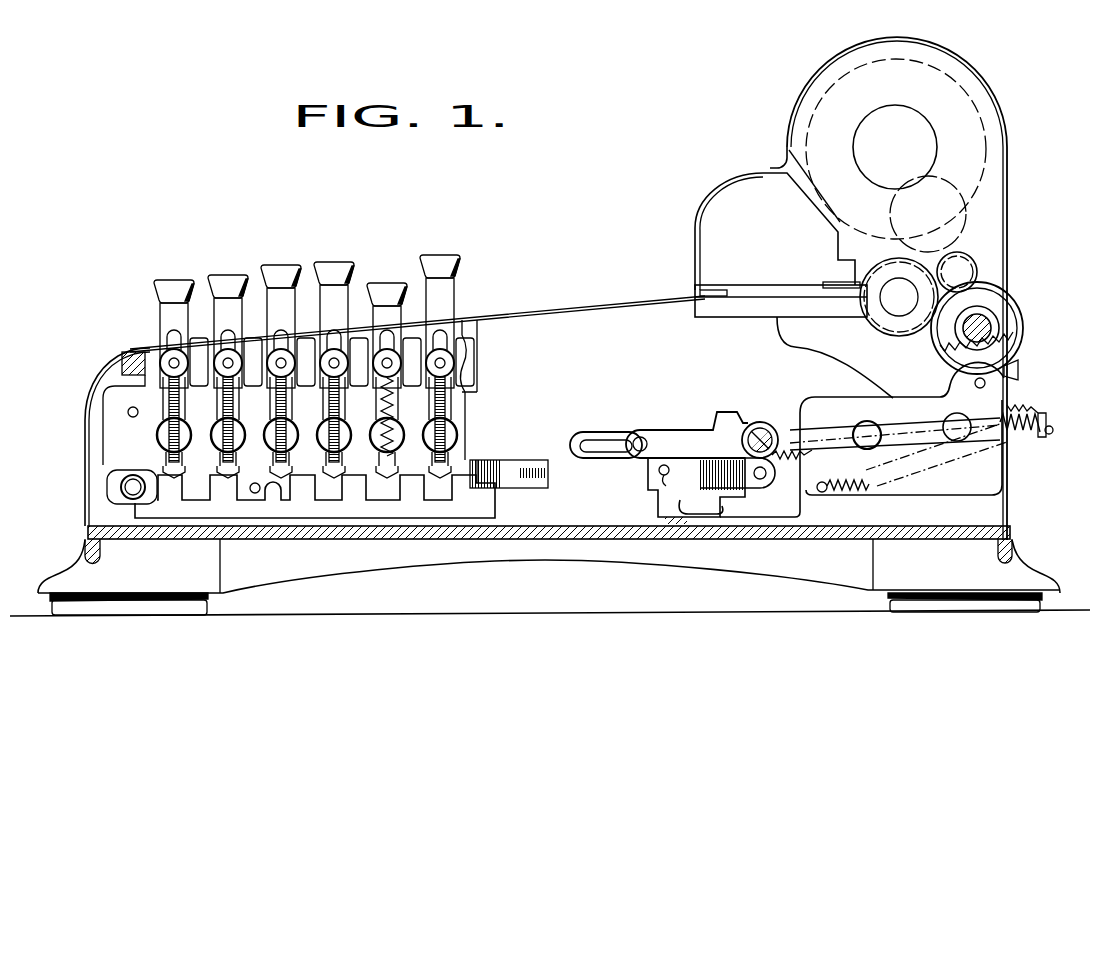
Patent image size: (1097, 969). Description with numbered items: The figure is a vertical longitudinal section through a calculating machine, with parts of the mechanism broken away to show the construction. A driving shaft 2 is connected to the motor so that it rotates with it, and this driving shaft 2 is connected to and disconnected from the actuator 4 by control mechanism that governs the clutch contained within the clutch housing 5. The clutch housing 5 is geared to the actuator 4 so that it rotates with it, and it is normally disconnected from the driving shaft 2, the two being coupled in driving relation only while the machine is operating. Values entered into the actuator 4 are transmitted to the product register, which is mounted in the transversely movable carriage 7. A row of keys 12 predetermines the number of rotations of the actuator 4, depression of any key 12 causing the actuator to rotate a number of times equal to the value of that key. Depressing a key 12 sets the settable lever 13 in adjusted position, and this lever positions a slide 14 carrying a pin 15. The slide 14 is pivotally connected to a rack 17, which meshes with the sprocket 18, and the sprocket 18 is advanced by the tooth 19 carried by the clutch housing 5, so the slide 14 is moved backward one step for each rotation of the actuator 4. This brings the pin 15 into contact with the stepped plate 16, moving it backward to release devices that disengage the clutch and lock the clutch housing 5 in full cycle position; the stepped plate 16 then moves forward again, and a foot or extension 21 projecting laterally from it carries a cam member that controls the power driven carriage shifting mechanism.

The driving shaft 2 is at (985, 333).
The actuator 4 is at (1008, 147).
The clutch housing 5 is at (1012, 310).
The carriage 7 is at (768, 241).
The keys 12 is at (322, 263).
The settable lever 13 is at (677, 440).
The slide 14 is at (597, 433).
The pin 15 is at (660, 477).
The stepped plate 16 is at (678, 493).
The rack 17 is at (1020, 420).
The sprocket 18 is at (1018, 368).
The tooth 19 is at (955, 338).
The foot or extension 21 is at (688, 520).